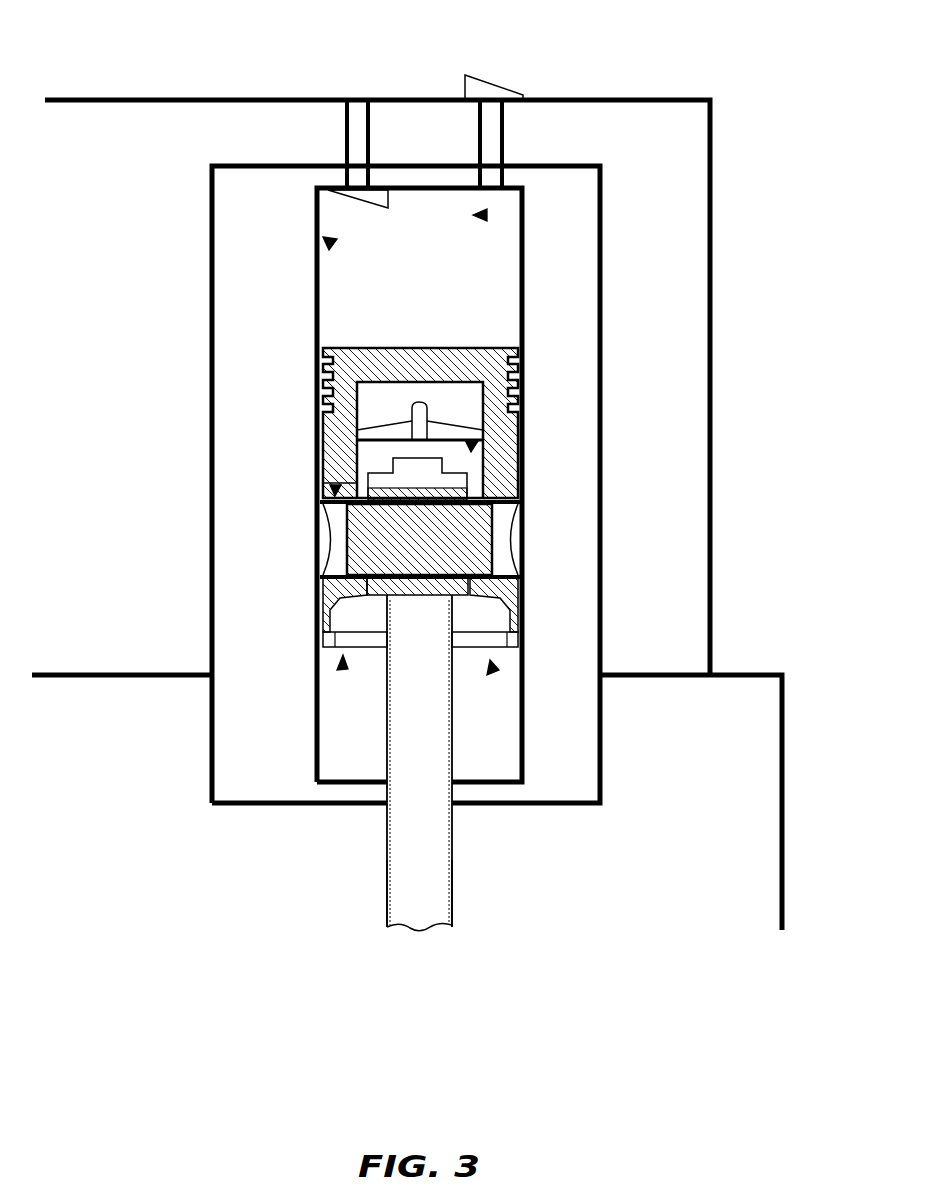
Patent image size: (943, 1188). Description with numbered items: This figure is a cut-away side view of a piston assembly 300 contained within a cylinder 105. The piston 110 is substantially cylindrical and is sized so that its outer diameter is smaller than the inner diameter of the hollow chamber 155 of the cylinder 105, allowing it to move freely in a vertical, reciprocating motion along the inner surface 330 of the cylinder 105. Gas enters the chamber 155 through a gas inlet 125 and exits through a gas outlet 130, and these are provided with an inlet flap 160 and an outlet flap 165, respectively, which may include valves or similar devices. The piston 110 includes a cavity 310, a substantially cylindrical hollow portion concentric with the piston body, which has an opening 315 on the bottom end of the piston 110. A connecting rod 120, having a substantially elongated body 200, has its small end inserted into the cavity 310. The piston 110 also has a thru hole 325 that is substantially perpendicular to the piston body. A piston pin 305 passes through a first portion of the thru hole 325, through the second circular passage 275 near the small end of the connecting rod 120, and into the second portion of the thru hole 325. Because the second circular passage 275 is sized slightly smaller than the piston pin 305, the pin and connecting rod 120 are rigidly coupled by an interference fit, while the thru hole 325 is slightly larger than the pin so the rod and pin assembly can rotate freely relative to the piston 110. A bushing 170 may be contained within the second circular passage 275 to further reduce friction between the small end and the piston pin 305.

The cylinder 105 is at (672, 280).
The piston 110 is at (522, 357).
The connecting rod 120 is at (453, 903).
The gas inlet 125 is at (345, 140).
The gas outlet 130 is at (503, 147).
The hollow chamber 155 is at (482, 215).
The inlet flap 160 is at (386, 197).
The outlet flap 165 is at (481, 87).
The bushing 170 is at (522, 495).
The body 200 is at (402, 817).
The second circular passage 275 is at (418, 603).
The piston assembly 300 is at (341, 660).
The piston pin 305 is at (522, 537).
The cavity 310 is at (476, 447).
The opening 315 is at (494, 665).
The thru hole 325 is at (318, 465).
The inner surface 330 is at (333, 242).